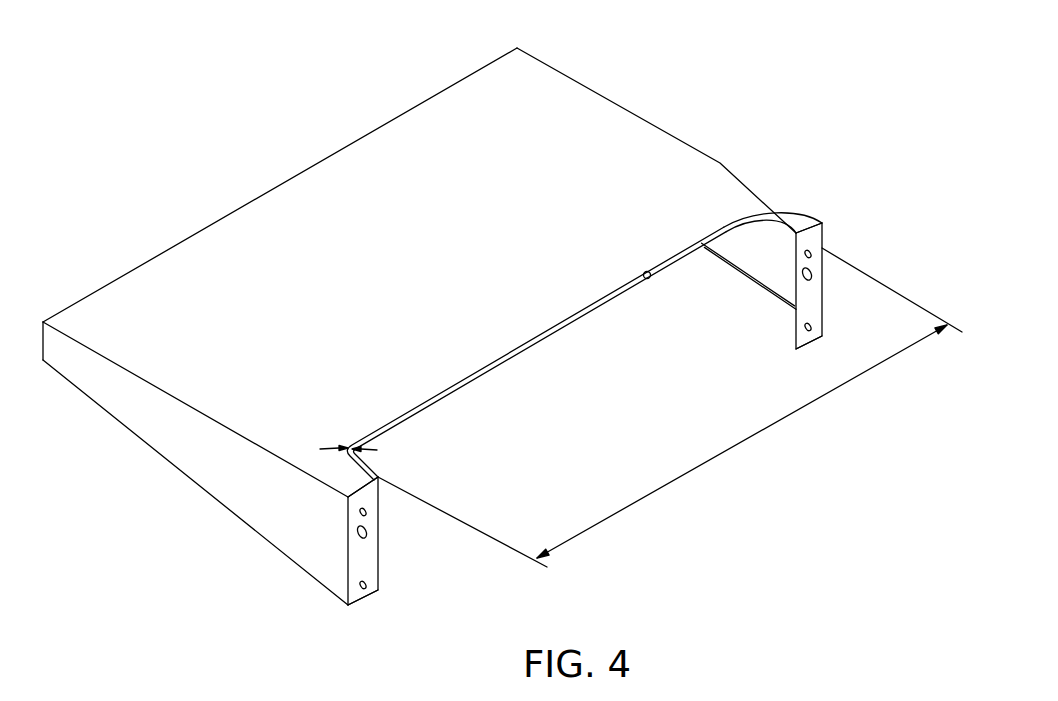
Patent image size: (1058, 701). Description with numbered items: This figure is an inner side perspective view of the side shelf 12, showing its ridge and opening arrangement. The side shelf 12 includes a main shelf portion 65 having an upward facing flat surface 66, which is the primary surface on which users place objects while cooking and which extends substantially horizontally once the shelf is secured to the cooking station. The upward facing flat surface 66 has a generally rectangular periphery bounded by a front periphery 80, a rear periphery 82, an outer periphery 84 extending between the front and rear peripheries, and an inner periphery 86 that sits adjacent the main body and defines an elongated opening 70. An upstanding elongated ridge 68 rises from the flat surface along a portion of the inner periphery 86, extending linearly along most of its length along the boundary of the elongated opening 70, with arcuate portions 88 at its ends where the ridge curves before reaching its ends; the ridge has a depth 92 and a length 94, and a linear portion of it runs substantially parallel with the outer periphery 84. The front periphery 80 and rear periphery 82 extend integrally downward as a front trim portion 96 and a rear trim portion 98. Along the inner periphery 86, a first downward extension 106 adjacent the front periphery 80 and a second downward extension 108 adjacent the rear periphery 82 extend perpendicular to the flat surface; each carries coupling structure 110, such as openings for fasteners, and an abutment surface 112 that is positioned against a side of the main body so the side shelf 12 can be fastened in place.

The side shelf 12 is at (750, 70).
The main shelf portion 65 is at (543, 92).
The upward facing flat surface 66 is at (607, 118).
The upstanding elongated ridge 68 is at (540, 325).
The elongated opening 70 is at (650, 271).
The front periphery 80 is at (178, 397).
The rear periphery 82 is at (702, 152).
The outer periphery 84 is at (335, 152).
The inner periphery 86 is at (808, 230).
The arcuate portions 88 is at (764, 213).
The depth 92 is at (332, 446).
The length 94 is at (731, 454).
The front trim portion 96 is at (245, 488).
The rear trim portion 98 is at (765, 263).
The first downward extension 106 is at (383, 563).
The second downward extension 108 is at (826, 283).
The coupling structure 110 is at (372, 532).
The abutment surface 112 is at (362, 558).